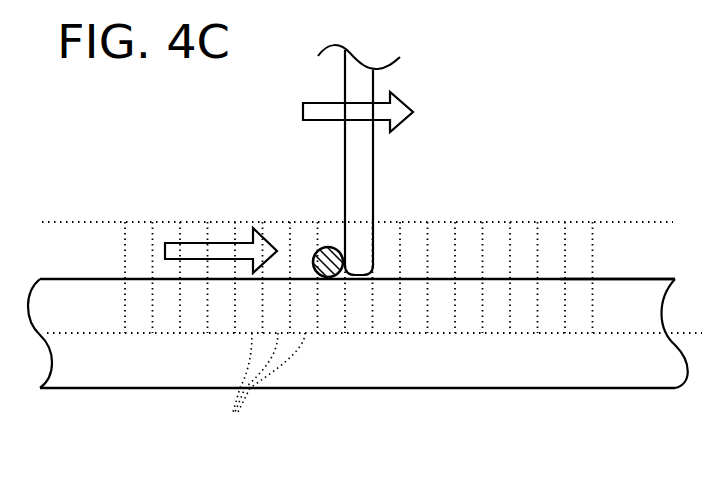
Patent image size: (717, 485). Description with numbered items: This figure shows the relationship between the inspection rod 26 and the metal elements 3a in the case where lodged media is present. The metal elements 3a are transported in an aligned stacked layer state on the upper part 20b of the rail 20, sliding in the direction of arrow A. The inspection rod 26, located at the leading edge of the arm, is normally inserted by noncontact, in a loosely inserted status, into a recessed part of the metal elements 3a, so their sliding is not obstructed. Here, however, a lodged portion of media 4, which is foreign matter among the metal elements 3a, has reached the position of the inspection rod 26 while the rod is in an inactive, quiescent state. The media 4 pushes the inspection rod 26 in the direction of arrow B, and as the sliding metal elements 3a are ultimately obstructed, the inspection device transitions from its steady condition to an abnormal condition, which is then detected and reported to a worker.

The rail 20 is at (592, 365).
The upper part of the rail 20b is at (618, 280).
The metal element 3a is at (263, 387).
The inspection rod 26 is at (375, 163).
The media 4 is at (332, 247).
The direction of arrow A is at (195, 243).
The direction of arrow B is at (380, 102).